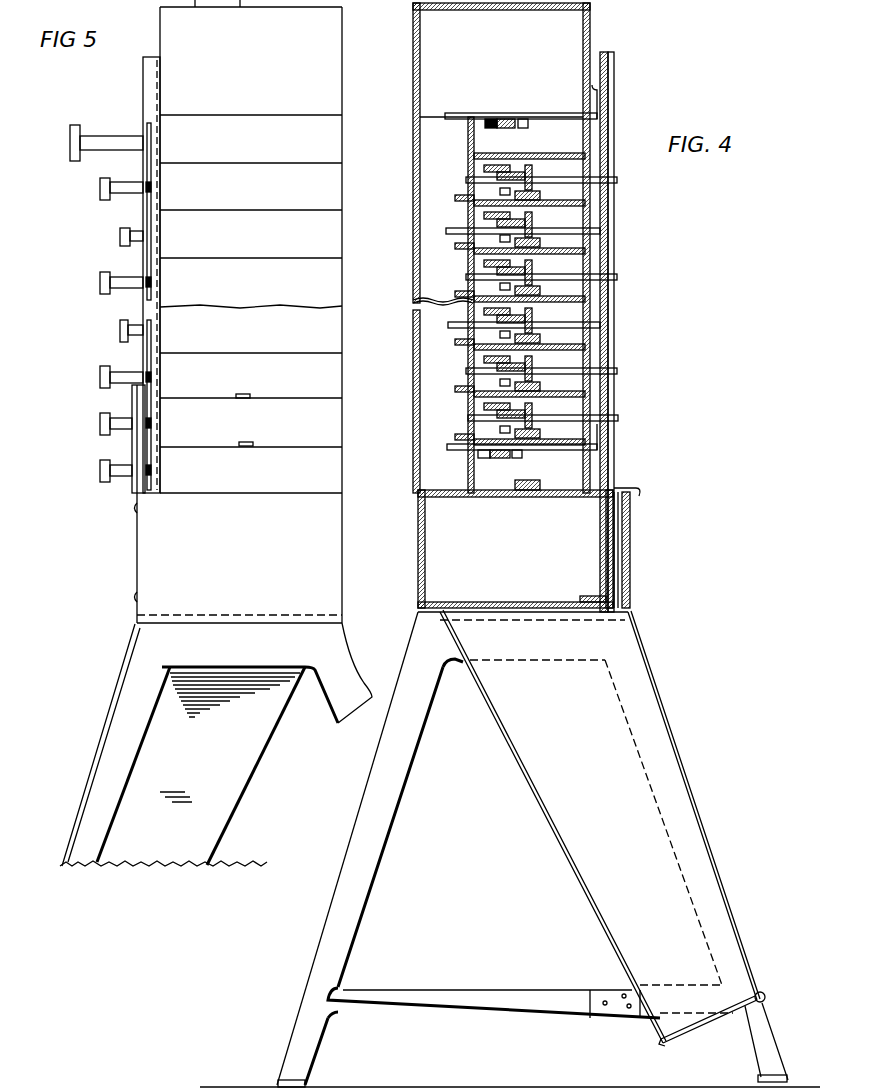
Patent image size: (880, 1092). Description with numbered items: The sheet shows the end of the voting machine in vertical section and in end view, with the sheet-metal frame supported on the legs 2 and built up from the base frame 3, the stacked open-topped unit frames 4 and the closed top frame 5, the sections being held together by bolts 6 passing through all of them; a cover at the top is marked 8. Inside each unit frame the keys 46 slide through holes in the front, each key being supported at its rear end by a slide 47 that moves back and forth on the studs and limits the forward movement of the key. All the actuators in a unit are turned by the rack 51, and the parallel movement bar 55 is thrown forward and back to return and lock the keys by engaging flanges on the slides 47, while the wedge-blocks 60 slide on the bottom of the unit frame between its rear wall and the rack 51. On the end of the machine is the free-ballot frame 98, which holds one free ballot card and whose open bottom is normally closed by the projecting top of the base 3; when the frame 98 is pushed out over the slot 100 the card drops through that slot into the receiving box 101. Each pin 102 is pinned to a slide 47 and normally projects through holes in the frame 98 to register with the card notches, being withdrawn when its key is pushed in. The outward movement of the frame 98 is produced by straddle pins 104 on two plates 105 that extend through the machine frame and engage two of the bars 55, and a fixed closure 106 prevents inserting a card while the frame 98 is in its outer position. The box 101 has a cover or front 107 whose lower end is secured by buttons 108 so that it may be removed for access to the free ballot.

In FIG. 5, the legs 2 is at (216, 744).
In FIG. 4, the legs 2 is at (388, 812).
In FIG. 5, the base frame 3 is at (177, 564).
In FIG. 4, the base frame 3 is at (425, 552).
In FIG. 5, the unit frames 4 is at (251, 304).
In FIG. 4, the unit frames 4 is at (468, 172).
In FIG. 5, the top frame 5 is at (251, 61).
In FIG. 4, the top frame 5 is at (418, 78).
In FIG. 4, the bolts 6 is at (418, 238).
In FIG. 5, the top cover 8 is at (360, 0).
In FIG. 5, the keys 46 is at (116, 185).
In FIG. 4, the slide 47 is at (532, 176).
In FIG. 4, the rack 51 is at (553, 210).
In FIG. 4, the parallel movement bar 55 is at (520, 147).
In FIG. 4, the wedge-blocks 60 is at (470, 204).
In FIG. 5, the frame 98 is at (148, 102).
In FIG. 4, the frame 98 is at (616, 210).
In FIG. 4, the slot 100 is at (622, 527).
In FIG. 5, the receiving box 101 is at (217, 766).
In FIG. 4, the receiving box 101 is at (596, 822).
In FIG. 4, the pin 102 is at (620, 183).
In FIG. 4, the straddle pins 104 is at (478, 124).
In FIG. 4, the plates 105 is at (540, 116).
In FIG. 5, the fixed closure 106 is at (136, 393).
In FIG. 4, the cover or front 107 is at (676, 745).
In FIG. 4, the buttons 108 is at (766, 993).